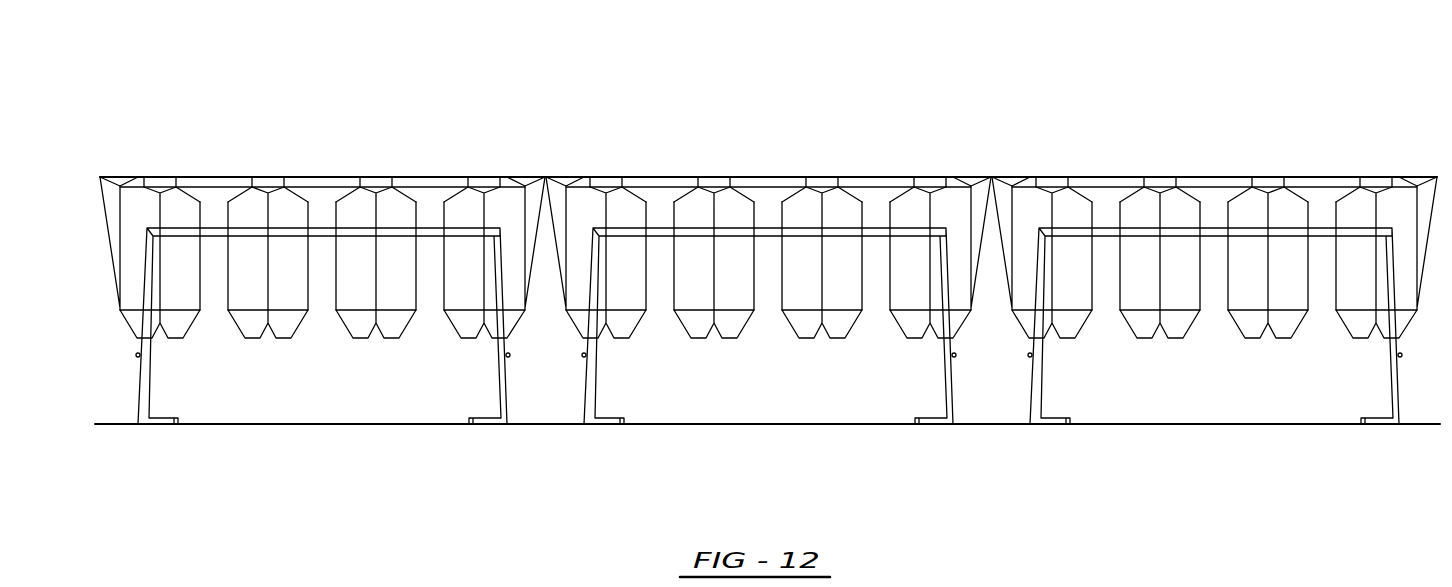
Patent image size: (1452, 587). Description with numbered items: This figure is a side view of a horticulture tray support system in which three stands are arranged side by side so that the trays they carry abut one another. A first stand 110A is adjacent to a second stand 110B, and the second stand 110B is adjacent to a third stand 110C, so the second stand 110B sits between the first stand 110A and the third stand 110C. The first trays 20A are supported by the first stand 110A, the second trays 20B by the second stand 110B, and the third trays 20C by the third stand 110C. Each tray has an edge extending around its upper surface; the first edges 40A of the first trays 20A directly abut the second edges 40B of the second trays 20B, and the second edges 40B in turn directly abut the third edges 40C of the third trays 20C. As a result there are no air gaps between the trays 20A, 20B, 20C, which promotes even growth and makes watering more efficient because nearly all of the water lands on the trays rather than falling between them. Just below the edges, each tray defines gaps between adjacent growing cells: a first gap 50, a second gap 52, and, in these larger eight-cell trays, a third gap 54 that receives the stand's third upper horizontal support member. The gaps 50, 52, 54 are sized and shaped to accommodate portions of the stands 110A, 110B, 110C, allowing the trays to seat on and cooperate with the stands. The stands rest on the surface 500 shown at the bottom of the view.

The first trays 20A is at (298, 177).
The second trays 20B is at (768, 221).
The third trays 20C is at (1214, 210).
The first edges 40A is at (105, 177).
The second edges 40B is at (768, 188).
The third edges 40C is at (1216, 188).
The first gap 50 is at (214, 228).
The second gap 52 is at (320, 226).
The third gap 54 is at (432, 225).
The first stand 110A is at (156, 424).
The second stand 110B is at (754, 373).
The third stand 110C is at (1215, 372).
The floor surface 500 is at (1282, 422).